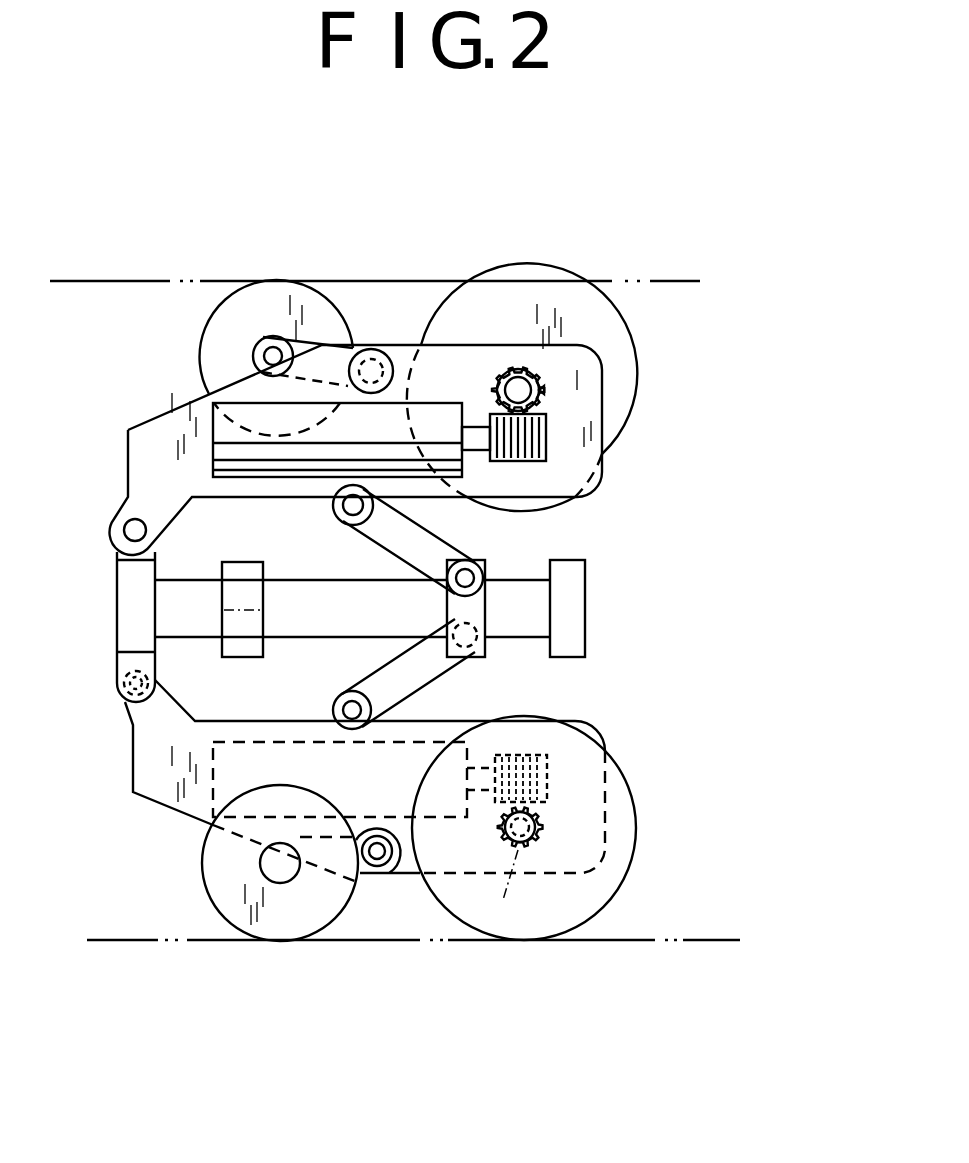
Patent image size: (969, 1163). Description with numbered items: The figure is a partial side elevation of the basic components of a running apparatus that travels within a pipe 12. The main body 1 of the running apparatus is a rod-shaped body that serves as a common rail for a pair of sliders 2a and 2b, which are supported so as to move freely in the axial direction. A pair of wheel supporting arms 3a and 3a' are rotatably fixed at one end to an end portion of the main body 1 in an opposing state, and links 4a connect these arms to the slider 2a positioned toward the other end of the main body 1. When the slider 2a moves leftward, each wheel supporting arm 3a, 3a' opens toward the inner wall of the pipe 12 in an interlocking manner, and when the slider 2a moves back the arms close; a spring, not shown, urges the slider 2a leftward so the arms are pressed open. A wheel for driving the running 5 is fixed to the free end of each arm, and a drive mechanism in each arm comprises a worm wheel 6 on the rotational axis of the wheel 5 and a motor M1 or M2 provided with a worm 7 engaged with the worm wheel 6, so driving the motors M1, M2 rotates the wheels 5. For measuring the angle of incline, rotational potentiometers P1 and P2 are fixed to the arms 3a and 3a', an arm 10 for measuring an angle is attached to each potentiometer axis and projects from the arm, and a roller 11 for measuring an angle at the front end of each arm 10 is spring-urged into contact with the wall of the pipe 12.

The main body of the running apparatus 1 is at (587, 607).
The slider 2a is at (487, 617).
The slider 2b is at (185, 708).
The wheel supporting arm 3a is at (326, 439).
The wheel supporting arm 3a' is at (320, 781).
The link 4a is at (440, 552).
The wheel for driving the running 5 is at (522, 307).
The worm wheel 6 is at (540, 388).
The worm 7 is at (548, 455).
The arm for measuring an angle 10 is at (263, 337).
The roller for measuring an angle 11 is at (235, 315).
The pipe 12 is at (653, 277).
The motor M1 is at (443, 417).
The motor M2 is at (222, 793).
The rotational potentiometer P1 is at (377, 349).
The rotational potentiometer P2 is at (405, 785).